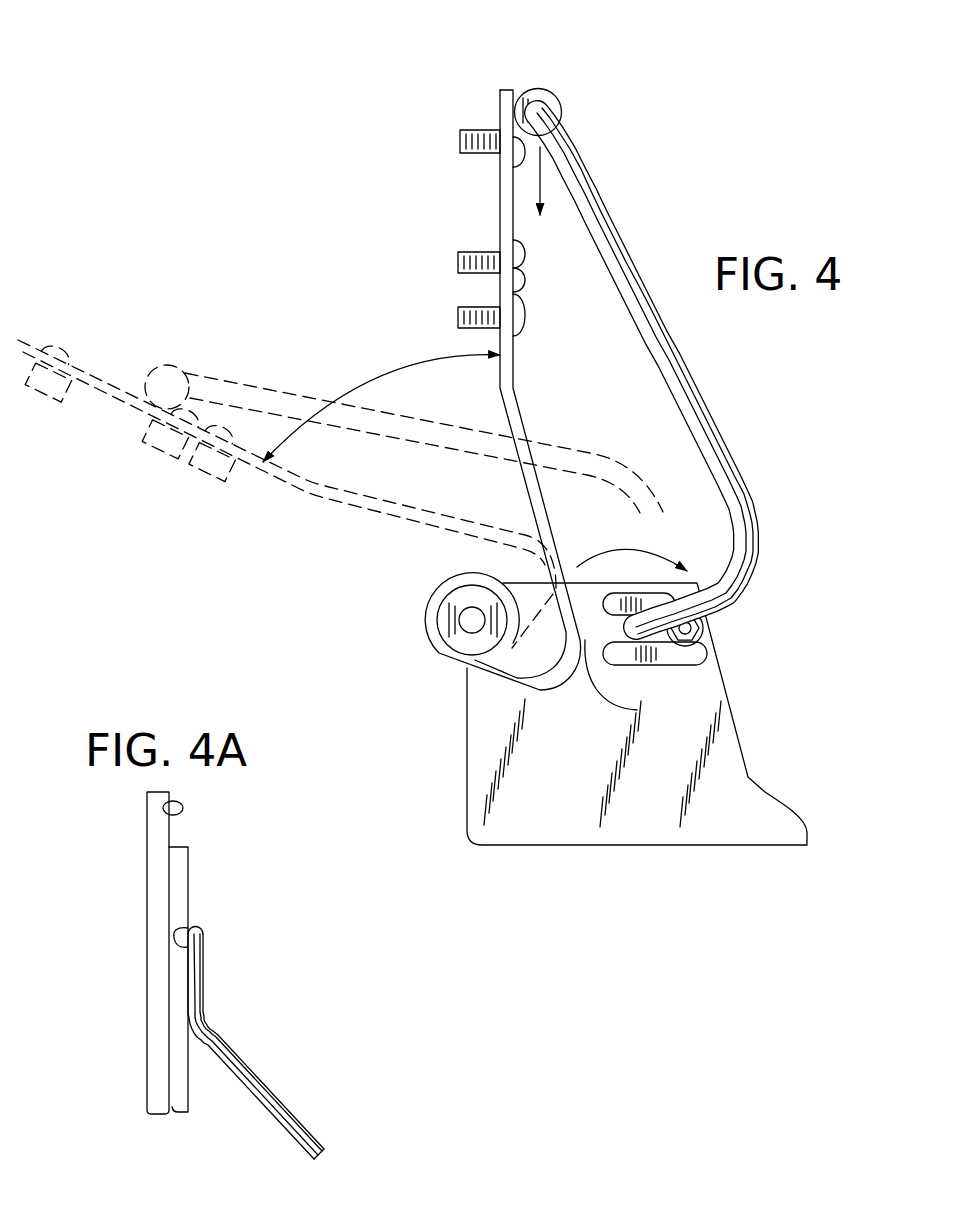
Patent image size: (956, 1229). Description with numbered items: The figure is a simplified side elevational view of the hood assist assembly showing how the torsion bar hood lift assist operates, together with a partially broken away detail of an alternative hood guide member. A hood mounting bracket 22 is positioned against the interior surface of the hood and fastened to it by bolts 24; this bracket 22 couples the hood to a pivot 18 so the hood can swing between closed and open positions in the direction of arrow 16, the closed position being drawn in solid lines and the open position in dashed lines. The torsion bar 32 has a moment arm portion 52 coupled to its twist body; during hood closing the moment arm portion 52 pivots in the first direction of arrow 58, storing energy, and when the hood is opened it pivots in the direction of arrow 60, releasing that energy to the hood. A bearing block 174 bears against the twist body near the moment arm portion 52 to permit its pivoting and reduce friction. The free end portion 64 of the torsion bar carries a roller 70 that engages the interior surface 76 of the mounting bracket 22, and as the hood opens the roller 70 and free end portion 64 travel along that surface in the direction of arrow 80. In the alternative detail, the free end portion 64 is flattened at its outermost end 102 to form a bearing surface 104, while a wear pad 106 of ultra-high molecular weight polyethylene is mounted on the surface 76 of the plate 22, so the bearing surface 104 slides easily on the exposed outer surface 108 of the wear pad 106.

In FIG. 4, the arrow 16 is at (355, 380).
In FIG. 4, the pivot 18 is at (447, 613).
In FIG. 4, the hood mounting bracket 22 is at (500, 228).
In FIG. 4A, the hood mounting bracket 22 is at (146, 938).
In FIG. 4, the bolts 24 is at (458, 318).
In FIG. 4, the torsion bar 32 is at (773, 478).
In FIG. 4, the moment arm portion 52 is at (716, 412).
In FIG. 4, the arrow 58 is at (665, 551).
In FIG. 4, the arrow 60 is at (677, 684).
In FIG. 4, the free end portion 64 is at (545, 84).
In FIG. 4A, the free end portion 64 is at (297, 1087).
In FIG. 4, the roller 70 is at (561, 104).
In FIG. 4, the interior surface 76 is at (513, 200).
In FIG. 4A, the interior surface 76 is at (163, 812).
In FIG. 4, the arrow 80 is at (545, 172).
In FIG. 4, the bearing block 174 is at (700, 656).
In FIG. 4A, the outermost end 102 is at (205, 990).
In FIG. 4A, the bearing surface 104 is at (180, 930).
In FIG. 4A, the wear pad 106 is at (182, 884).
In FIG. 4A, the exposed outer surface 108 is at (188, 897).